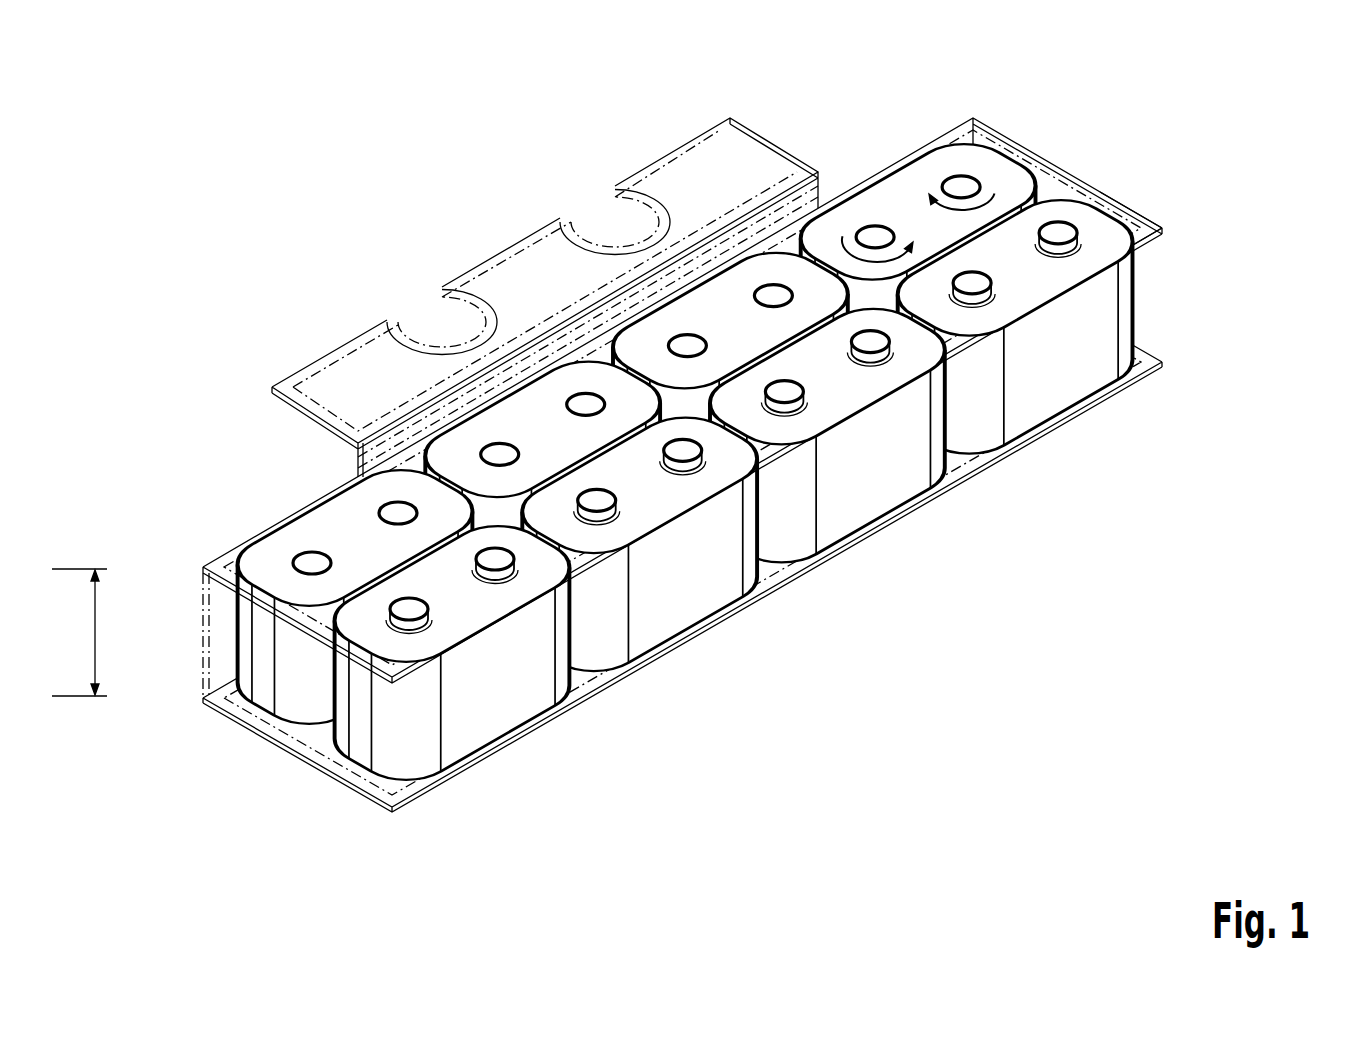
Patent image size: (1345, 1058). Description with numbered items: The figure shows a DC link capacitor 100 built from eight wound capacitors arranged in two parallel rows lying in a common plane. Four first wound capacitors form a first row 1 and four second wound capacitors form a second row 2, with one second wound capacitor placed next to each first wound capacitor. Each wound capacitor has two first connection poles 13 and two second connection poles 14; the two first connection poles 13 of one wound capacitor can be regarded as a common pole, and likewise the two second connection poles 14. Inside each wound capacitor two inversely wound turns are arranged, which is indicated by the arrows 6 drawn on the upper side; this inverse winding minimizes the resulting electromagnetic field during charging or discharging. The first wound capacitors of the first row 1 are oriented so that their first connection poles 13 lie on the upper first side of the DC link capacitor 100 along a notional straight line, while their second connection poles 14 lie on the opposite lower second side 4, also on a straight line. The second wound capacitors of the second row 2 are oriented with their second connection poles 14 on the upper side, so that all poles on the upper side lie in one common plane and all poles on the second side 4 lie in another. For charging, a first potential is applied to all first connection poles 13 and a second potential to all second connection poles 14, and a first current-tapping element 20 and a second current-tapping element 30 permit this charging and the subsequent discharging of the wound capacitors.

The DC link capacitor 100 is at (688, 453).
The first row 1 is at (653, 460).
The second row 2 is at (625, 555).
The second side 4 is at (78, 700).
The arrows 6 is at (845, 224).
The first connection pole 13 is at (395, 514).
The second connection pole 14 is at (410, 608).
The first current-tapping element 20 is at (1147, 240).
The second current-tapping element 30 is at (1148, 217).